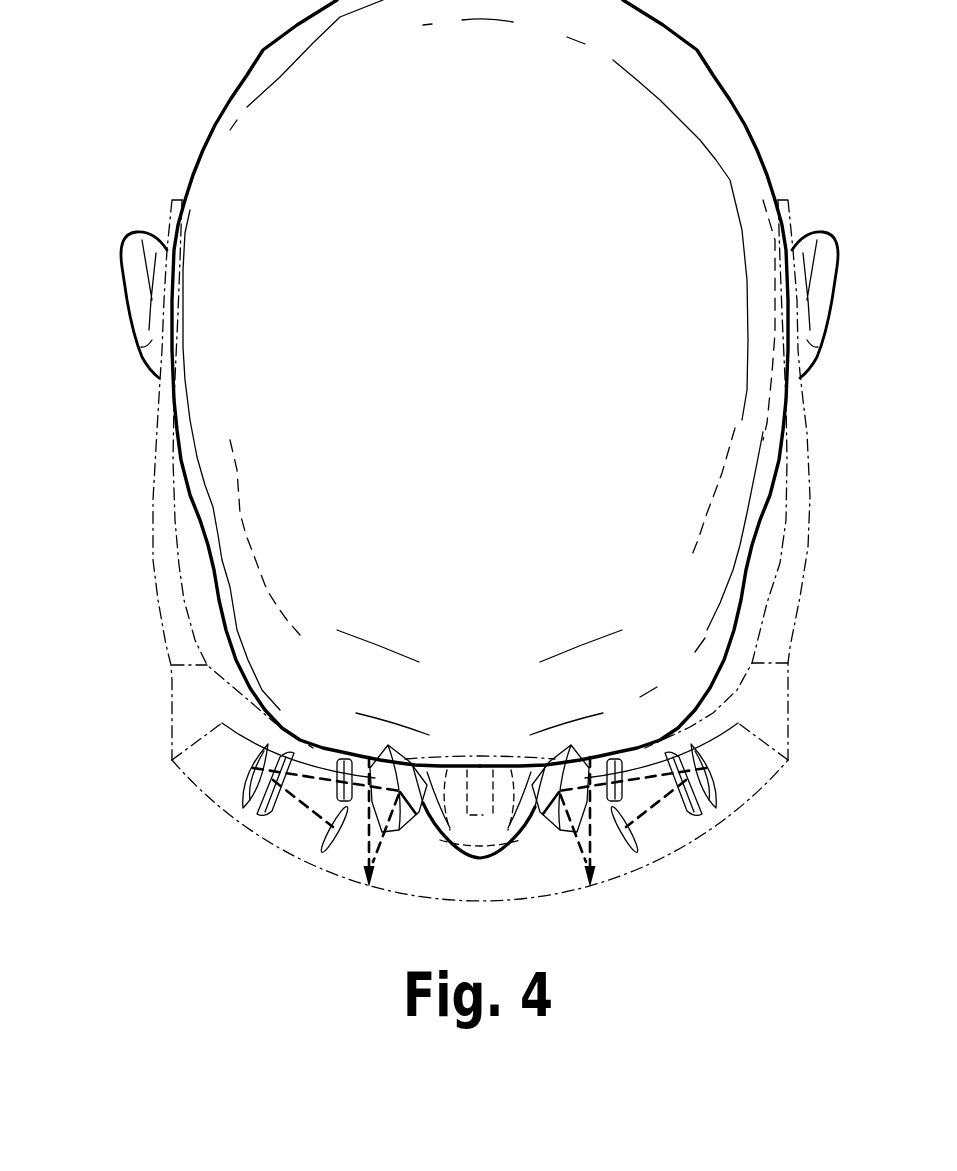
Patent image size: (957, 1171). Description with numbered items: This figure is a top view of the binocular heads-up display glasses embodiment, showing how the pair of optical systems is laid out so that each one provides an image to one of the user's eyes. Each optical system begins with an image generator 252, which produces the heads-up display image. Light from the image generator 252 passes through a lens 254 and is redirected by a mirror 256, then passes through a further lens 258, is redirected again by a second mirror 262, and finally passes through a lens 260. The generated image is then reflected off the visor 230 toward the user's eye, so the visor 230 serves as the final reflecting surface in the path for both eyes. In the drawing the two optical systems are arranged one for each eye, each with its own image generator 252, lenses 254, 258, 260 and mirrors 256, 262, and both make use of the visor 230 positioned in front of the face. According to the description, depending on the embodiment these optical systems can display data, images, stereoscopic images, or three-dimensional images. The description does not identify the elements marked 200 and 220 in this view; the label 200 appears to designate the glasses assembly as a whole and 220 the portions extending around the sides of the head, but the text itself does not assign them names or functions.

The head-mounted display system 200 is at (104, 512).
The strap 220 is at (155, 565).
The visor 230 is at (320, 867).
The image generator 252 is at (362, 862).
The lens 254 is at (257, 810).
The mirror 256 is at (247, 790).
The lens 258 is at (338, 770).
The lens 260 is at (393, 833).
The mirror 262 is at (415, 770).